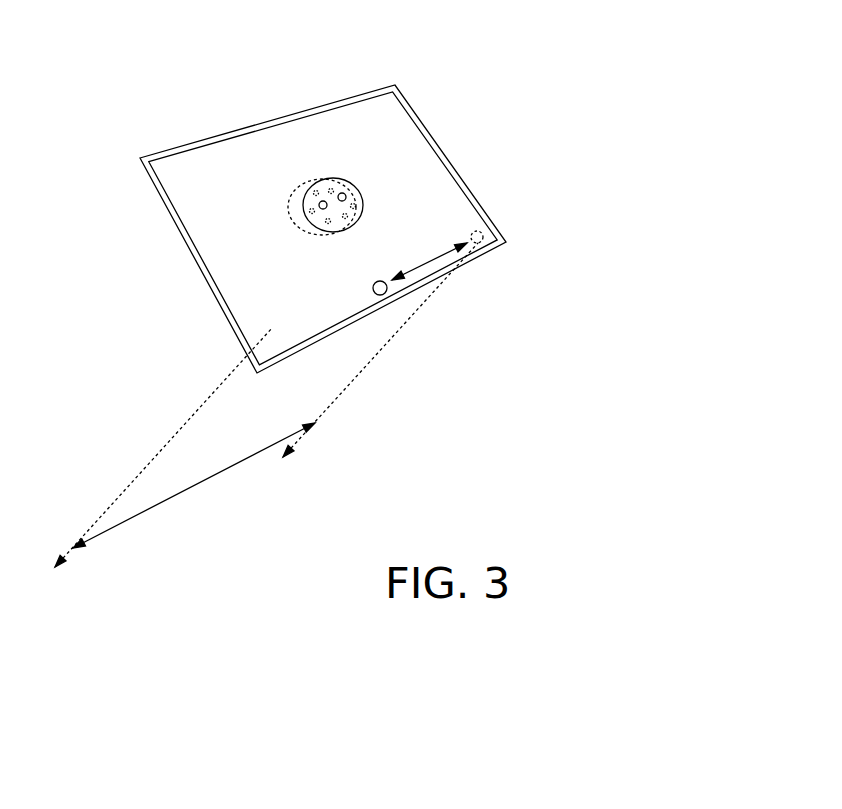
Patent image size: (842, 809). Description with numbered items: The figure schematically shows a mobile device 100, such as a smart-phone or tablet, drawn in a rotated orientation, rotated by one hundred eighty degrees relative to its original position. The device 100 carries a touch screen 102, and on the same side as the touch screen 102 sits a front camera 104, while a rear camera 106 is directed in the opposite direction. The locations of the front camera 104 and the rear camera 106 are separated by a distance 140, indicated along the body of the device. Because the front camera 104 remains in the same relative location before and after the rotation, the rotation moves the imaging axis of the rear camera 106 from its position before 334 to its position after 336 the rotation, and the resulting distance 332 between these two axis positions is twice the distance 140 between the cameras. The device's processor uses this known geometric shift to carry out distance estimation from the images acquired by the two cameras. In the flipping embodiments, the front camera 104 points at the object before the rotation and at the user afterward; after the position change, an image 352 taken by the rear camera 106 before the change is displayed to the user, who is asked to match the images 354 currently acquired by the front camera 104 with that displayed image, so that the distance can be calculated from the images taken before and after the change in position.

The mobile device 100 is at (610, 55).
The touch screen 102 is at (437, 188).
The front camera 104 is at (373, 288).
The rear camera 106 is at (495, 247).
The distance between front camera and rear camera 140 is at (430, 261).
The image taken by rear camera before the position change 352 is at (298, 185).
The images currently acquired by front camera 354 is at (363, 188).
The distance between imaging axes of rear camera before and after rotation 332 is at (205, 482).
The imaging axis of rear camera before rotation 334 is at (162, 450).
The imaging axis of rear camera after rotation 336 is at (322, 413).